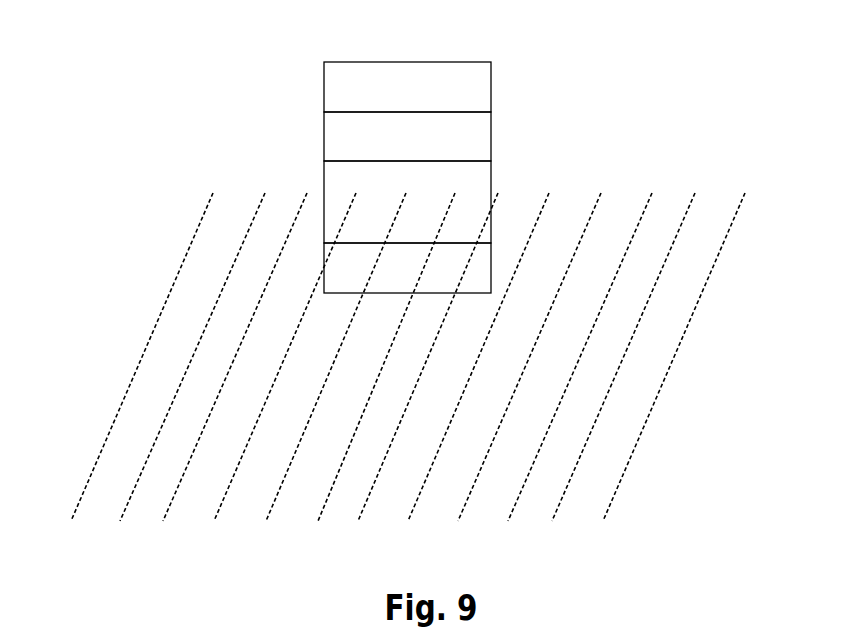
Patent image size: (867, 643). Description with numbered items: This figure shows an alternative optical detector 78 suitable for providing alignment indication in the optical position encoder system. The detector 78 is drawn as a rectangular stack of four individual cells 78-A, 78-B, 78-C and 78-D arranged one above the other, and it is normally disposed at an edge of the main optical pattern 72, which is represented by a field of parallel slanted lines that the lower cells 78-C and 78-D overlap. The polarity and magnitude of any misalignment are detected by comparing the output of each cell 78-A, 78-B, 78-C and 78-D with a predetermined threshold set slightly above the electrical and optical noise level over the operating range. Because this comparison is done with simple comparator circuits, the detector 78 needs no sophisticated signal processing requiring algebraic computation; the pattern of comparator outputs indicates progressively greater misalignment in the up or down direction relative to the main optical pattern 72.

The main optical pattern 72 is at (432, 357).
The detector 78 is at (481, 154).
The cell 78-A is at (407, 87).
The cell 78-B is at (407, 136).
The cell 78-C is at (407, 202).
The cell 78-D is at (407, 268).